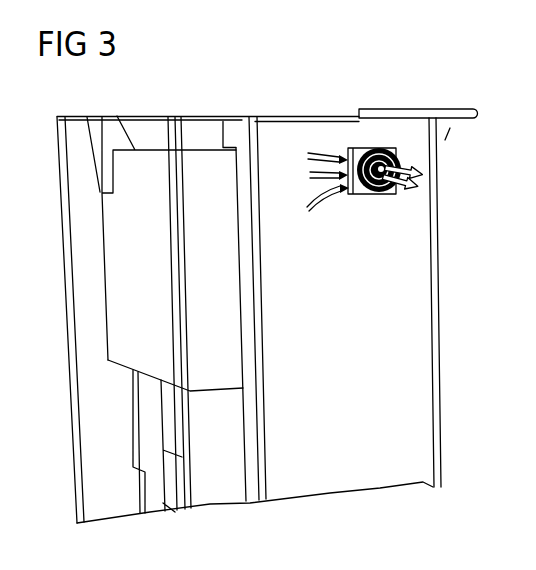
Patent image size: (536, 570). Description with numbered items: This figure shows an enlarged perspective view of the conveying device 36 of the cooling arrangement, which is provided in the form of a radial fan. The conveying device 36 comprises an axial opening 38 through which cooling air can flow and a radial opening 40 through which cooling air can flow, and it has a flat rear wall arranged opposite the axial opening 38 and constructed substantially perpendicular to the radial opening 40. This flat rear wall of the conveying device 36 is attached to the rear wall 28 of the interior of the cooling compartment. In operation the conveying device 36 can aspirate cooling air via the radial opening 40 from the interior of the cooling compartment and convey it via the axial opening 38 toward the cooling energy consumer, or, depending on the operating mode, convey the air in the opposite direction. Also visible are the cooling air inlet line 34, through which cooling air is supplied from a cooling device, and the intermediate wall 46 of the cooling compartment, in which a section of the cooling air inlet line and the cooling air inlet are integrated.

The rear wall 28 is at (466, 111).
The cooling air inlet line 34 is at (123, 445).
The conveying device 36 is at (394, 130).
The axial opening 38 is at (380, 196).
The radial opening 40 is at (334, 133).
The intermediate wall 46 is at (212, 497).